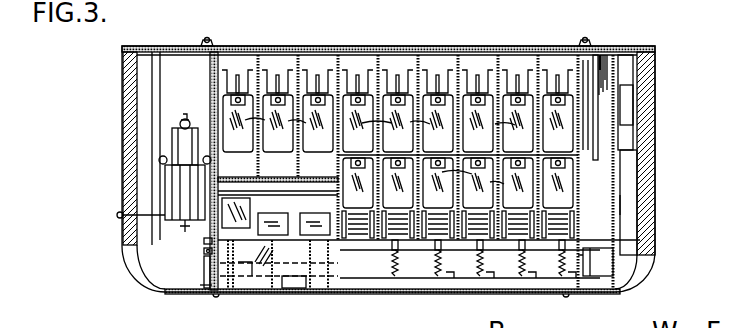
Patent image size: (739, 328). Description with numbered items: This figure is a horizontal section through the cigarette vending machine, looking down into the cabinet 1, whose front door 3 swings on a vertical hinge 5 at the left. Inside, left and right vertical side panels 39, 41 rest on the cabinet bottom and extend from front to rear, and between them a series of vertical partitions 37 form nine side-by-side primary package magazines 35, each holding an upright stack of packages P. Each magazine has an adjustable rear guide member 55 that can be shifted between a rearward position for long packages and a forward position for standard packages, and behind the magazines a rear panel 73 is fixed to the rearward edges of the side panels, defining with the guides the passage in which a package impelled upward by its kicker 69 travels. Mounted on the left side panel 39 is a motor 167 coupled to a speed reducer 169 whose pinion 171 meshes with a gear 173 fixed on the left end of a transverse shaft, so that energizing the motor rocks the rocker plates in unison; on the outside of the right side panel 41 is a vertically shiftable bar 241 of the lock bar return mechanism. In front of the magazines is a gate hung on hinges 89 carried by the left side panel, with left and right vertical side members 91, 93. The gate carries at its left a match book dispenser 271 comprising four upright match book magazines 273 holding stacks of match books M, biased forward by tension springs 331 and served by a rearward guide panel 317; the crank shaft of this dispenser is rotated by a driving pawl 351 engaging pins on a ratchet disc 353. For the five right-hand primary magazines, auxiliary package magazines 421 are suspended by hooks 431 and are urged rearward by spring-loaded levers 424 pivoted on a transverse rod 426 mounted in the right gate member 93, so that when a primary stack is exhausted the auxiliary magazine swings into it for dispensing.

The cabinet 1 is at (494, 33).
The front door 3 is at (130, 278).
The vertical hinge 5 is at (118, 214).
The primary package magazine 35 is at (505, 136).
The vertical partition 37 is at (288, 162).
The left hand vertical side panel 39 is at (216, 77).
The right hand vertical side panel 41 is at (580, 63).
The adjustable rear guide member 55 is at (228, 68).
The kicker 69 is at (432, 85).
The rear panel 73 is at (340, 56).
The hinge 89 is at (206, 243).
The left vertical side member 91 is at (207, 252).
The right vertical side member 93 is at (585, 262).
The motor 167 is at (163, 185).
The speed reducer 169 is at (172, 140).
The pinion 171 is at (214, 123).
The gear 173 is at (207, 205).
The vertically shiftable bar 241 is at (650, 223).
The match book dispenser 271 is at (376, 258).
The match book magazine 273 is at (335, 212).
The rearward guide panel 317 is at (326, 172).
The tension spring 331 is at (232, 288).
The driving pawl 351 is at (215, 262).
The disc 353 is at (215, 283).
The auxiliary package magazine 421 is at (598, 152).
The spring-loaded lever 424 is at (462, 246).
The transverse rod 426 is at (505, 255).
The hook 431 is at (436, 262).
The match book M is at (279, 264).
The package P is at (387, 145).